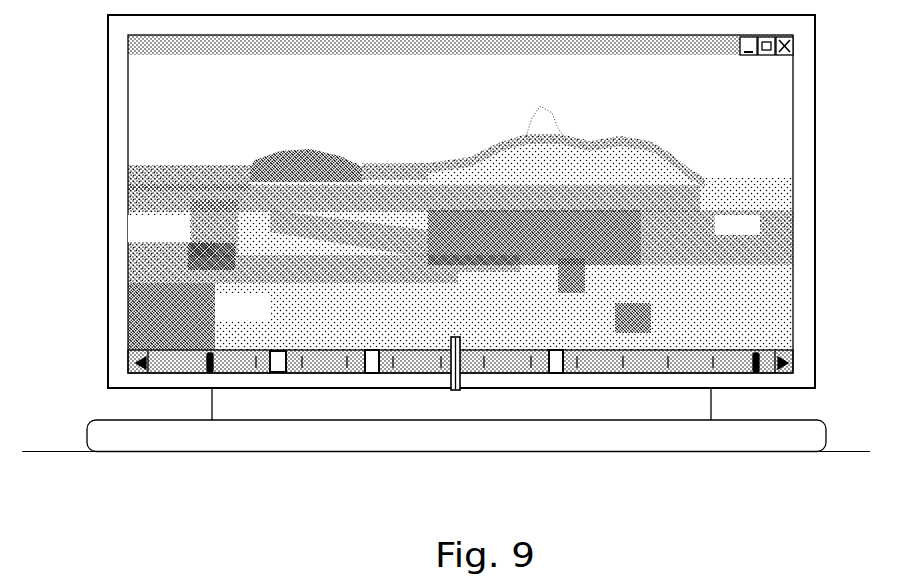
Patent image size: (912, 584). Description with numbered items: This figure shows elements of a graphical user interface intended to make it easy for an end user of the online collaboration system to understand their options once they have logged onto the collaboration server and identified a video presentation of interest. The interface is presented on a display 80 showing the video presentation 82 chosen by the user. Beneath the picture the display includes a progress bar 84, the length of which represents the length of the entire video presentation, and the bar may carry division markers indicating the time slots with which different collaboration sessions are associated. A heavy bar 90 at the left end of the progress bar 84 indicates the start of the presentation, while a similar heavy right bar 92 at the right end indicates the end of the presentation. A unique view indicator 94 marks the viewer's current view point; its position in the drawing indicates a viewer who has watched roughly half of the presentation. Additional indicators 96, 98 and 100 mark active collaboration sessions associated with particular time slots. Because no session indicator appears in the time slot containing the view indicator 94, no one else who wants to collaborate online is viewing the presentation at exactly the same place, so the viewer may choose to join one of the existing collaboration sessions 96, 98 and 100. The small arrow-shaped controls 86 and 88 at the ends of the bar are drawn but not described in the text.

The display 80 is at (108, 200).
The video presentation 82 is at (145, 108).
The progress bar 84 is at (182, 373).
The rewind control 86 is at (130, 362).
The forward control 88 is at (790, 373).
The heavy bar 90 is at (207, 375).
The heavy right bar 92 is at (755, 375).
The view indicator 94 is at (447, 372).
The indicator 96 is at (268, 375).
The indicator 98 is at (354, 375).
The indicator 100 is at (553, 375).